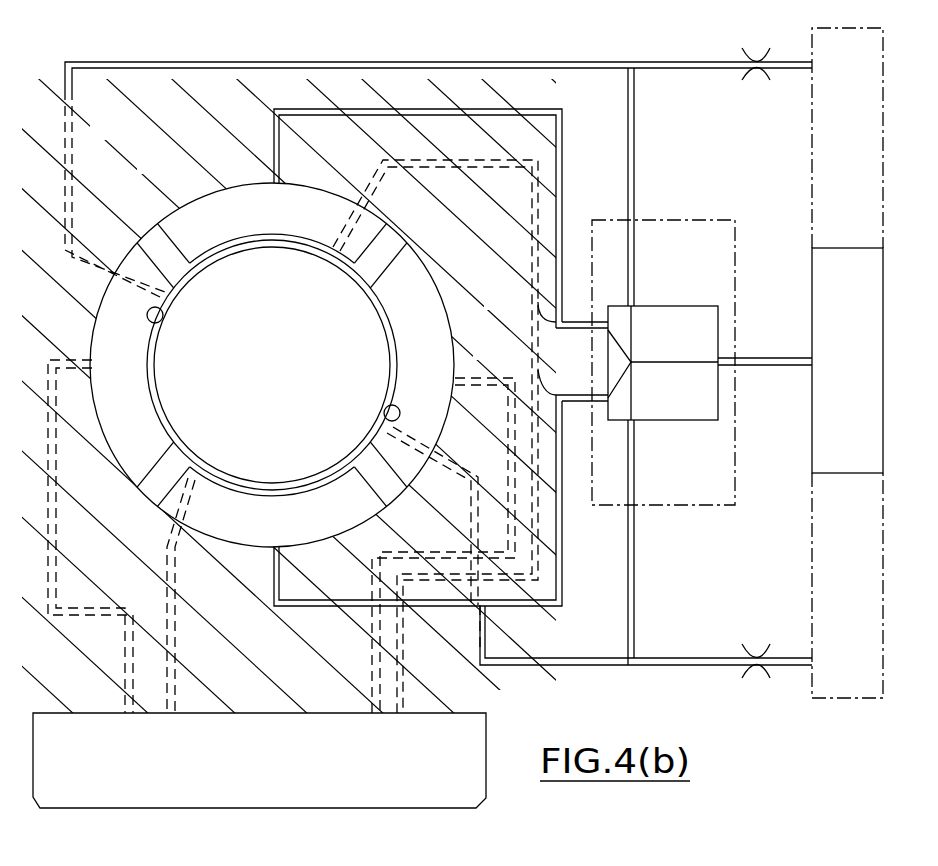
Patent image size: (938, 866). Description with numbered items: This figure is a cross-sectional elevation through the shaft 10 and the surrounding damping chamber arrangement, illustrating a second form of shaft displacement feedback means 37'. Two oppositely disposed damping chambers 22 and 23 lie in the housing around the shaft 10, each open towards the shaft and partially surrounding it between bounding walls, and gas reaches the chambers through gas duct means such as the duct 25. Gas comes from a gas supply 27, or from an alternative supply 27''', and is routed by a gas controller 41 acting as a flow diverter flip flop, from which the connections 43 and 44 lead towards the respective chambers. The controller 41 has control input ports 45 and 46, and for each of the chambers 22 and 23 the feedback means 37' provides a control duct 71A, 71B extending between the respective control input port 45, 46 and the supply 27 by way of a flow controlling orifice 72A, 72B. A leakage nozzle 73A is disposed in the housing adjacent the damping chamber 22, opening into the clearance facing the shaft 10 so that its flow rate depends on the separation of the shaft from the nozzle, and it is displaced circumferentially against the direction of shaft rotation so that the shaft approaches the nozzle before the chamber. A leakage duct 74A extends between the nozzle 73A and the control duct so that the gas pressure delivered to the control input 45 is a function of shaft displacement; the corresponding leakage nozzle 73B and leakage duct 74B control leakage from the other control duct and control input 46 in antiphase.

The rotor 10 is at (284, 358).
The damping chamber 22 is at (278, 220).
The damping chamber 23 is at (274, 532).
The duct 25 is at (268, 130).
The gas supply 27 is at (800, 360).
The alternative supply 27''' is at (847, 363).
The shaft displacement feedback means 37' is at (301, 368).
The controller 41 is at (730, 221).
The passage 43 is at (538, 306).
The passage 44 is at (530, 362).
The control input port 45 is at (628, 218).
The control input port 46 is at (634, 506).
The control duct 71A is at (668, 68).
The control duct 71B is at (662, 658).
The flow controlling orifice 72A is at (758, 82).
The flow controlling orifice 72B is at (757, 646).
The leakage nozzle 73A is at (152, 323).
The leakage nozzle 73B is at (386, 404).
The leakage duct 74A is at (80, 190).
The leakage duct 74B is at (546, 528).